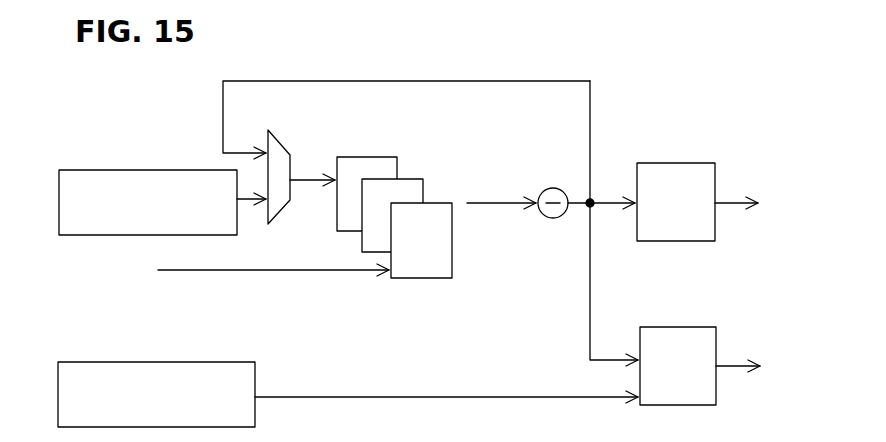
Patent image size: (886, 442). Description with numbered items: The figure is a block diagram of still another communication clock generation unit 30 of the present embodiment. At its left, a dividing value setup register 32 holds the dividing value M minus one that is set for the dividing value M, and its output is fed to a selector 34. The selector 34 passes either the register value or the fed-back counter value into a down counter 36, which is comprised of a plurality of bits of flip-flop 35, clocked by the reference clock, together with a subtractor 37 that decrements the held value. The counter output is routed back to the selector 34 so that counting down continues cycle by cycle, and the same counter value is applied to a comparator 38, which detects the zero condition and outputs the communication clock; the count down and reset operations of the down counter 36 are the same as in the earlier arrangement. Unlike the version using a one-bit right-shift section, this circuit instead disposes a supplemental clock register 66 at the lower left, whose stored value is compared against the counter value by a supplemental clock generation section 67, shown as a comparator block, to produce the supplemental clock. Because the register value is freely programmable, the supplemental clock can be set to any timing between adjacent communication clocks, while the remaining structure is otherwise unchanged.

The communication clock generation unit 30 is at (338, 60).
The dividing value setup register 32 is at (162, 192).
The selector 34 is at (281, 141).
The flip-flop 35 is at (384, 157).
The down counter 36 is at (480, 272).
The subtractor 37 is at (586, 189).
The comparator 38 is at (729, 191).
The supplemental clock register 66 is at (348, 384).
The supplemental clock generation section 67 is at (732, 353).